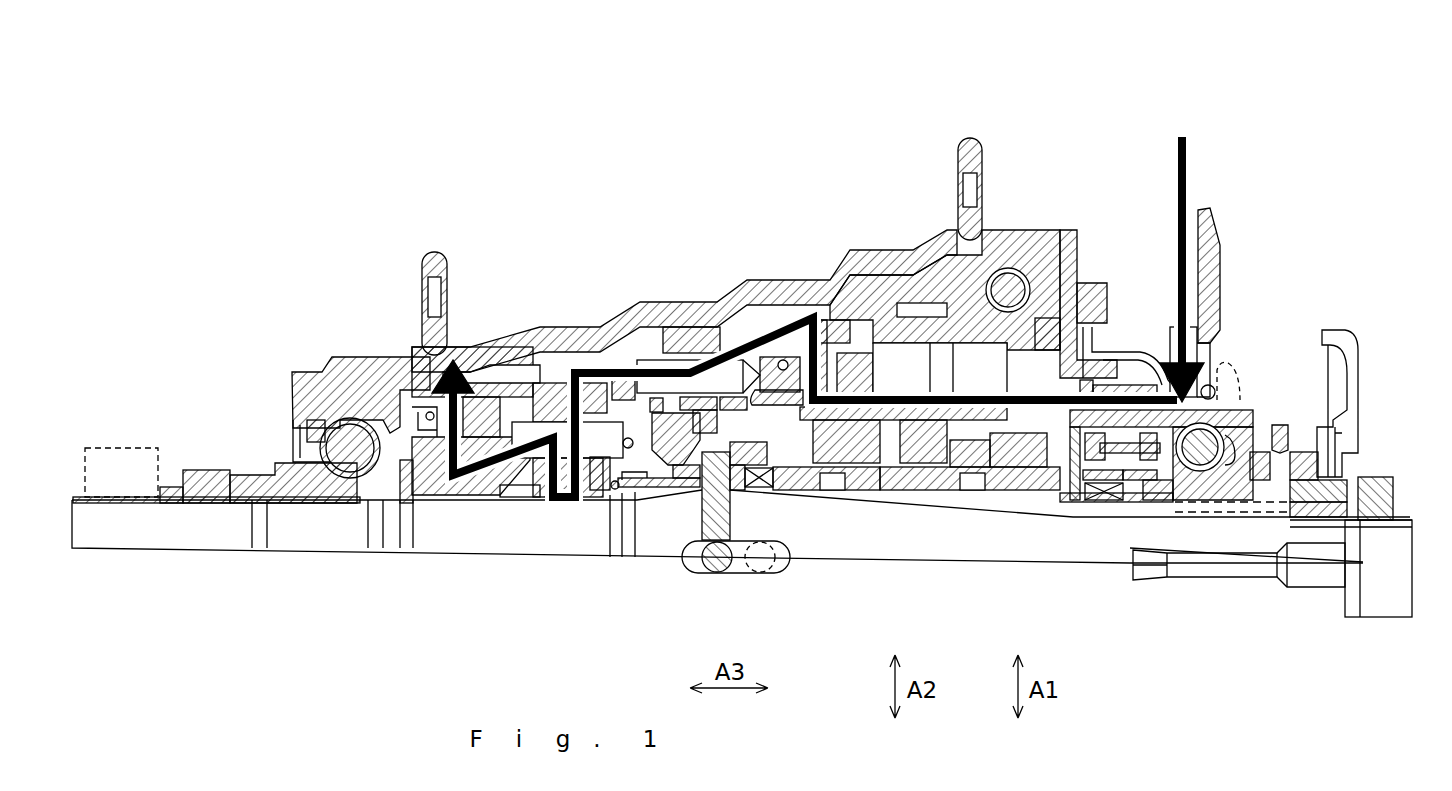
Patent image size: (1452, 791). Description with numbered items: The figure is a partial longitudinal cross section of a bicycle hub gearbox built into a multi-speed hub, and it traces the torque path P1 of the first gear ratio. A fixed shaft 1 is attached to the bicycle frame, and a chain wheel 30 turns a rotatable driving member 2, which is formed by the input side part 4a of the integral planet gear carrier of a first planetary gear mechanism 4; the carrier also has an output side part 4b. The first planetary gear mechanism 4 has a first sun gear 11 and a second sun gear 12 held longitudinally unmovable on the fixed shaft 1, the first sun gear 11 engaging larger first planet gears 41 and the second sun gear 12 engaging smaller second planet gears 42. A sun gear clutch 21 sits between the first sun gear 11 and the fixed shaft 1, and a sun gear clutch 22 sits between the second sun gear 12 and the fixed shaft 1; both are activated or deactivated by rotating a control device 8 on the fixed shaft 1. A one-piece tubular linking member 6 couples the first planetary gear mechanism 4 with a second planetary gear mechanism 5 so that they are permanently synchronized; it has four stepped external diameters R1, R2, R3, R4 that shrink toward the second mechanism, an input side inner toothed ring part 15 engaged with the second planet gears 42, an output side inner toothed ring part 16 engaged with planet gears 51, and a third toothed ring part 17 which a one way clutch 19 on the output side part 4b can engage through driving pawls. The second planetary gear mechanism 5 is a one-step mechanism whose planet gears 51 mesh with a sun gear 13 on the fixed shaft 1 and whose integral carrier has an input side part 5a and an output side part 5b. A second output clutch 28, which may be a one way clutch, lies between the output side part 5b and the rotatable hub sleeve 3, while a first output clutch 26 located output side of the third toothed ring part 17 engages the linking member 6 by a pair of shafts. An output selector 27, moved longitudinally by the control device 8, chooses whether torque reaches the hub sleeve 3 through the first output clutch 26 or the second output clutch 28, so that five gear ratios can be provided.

The fixed shaft 1 is at (292, 540).
The rotatable driving member 2 is at (1080, 320).
The rotatable hub sleeve 3 is at (400, 365).
The first planetary gear mechanism 4 is at (953, 303).
The input side part 4a is at (1073, 317).
The output side part 4b is at (787, 490).
The second planetary gear mechanism 5 is at (497, 347).
The input side part 5a is at (600, 497).
The output side part 5b is at (437, 487).
The linking member 6 is at (737, 303).
The control device 8 is at (1282, 412).
The first sun gear 11 is at (1007, 503).
The second sun gear 12 is at (920, 503).
The sun gear 13 is at (523, 493).
The inner toothed ring part 15 is at (902, 337).
The inner toothed ring part 16 is at (525, 387).
The third toothed ring part 17 is at (783, 307).
The one way clutch 19 is at (807, 490).
The sun gear clutch 21 is at (1045, 520).
The sun gear clutch 22 is at (900, 503).
The first output clutch 26 is at (683, 327).
The output selector 27 is at (680, 490).
The second output clutch 28 is at (480, 420).
The chain wheel 30 is at (1220, 243).
The first planet gears 41 is at (1047, 330).
The second planet gears 42 is at (988, 287).
The planet gears 51 is at (540, 497).
The external diameter R1 is at (597, 387).
The external diameter R2 is at (627, 380).
The external diameter R3 is at (773, 317).
The external diameter R4 is at (830, 337).
The transmission path of the driving torque of the first gear ratio P1 is at (1190, 157).